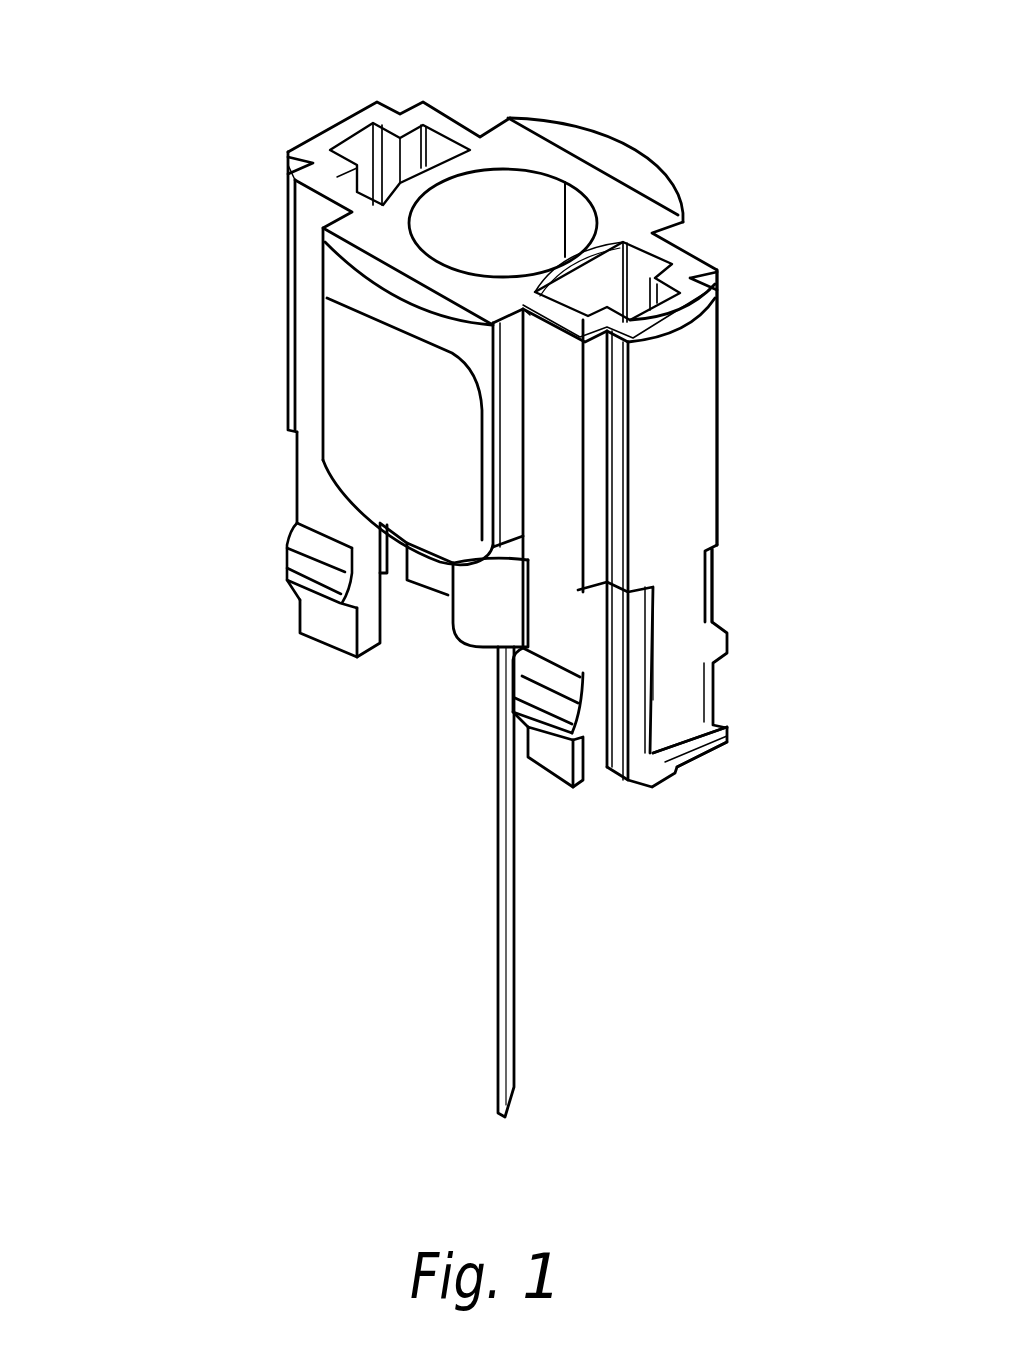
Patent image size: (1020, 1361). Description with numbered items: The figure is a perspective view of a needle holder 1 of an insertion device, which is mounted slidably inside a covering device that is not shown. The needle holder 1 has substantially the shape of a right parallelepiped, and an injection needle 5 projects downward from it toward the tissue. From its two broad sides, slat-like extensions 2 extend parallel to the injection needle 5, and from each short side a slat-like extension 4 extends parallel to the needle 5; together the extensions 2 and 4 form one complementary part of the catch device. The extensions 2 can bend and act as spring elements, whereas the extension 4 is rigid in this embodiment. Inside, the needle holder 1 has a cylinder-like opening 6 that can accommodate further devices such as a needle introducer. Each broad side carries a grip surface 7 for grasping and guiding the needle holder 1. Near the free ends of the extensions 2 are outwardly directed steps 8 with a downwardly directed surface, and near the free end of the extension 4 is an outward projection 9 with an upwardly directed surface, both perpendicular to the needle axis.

The needle holder 1 is at (655, 188).
The slat-like extensions 2 is at (320, 618).
The slat-like extension 4 is at (683, 625).
The injection needle 5 is at (498, 827).
The cylinder-like opening 6 is at (548, 200).
The grip surface 7 is at (373, 425).
The steps 8 is at (303, 563).
The projection 9 is at (718, 727).